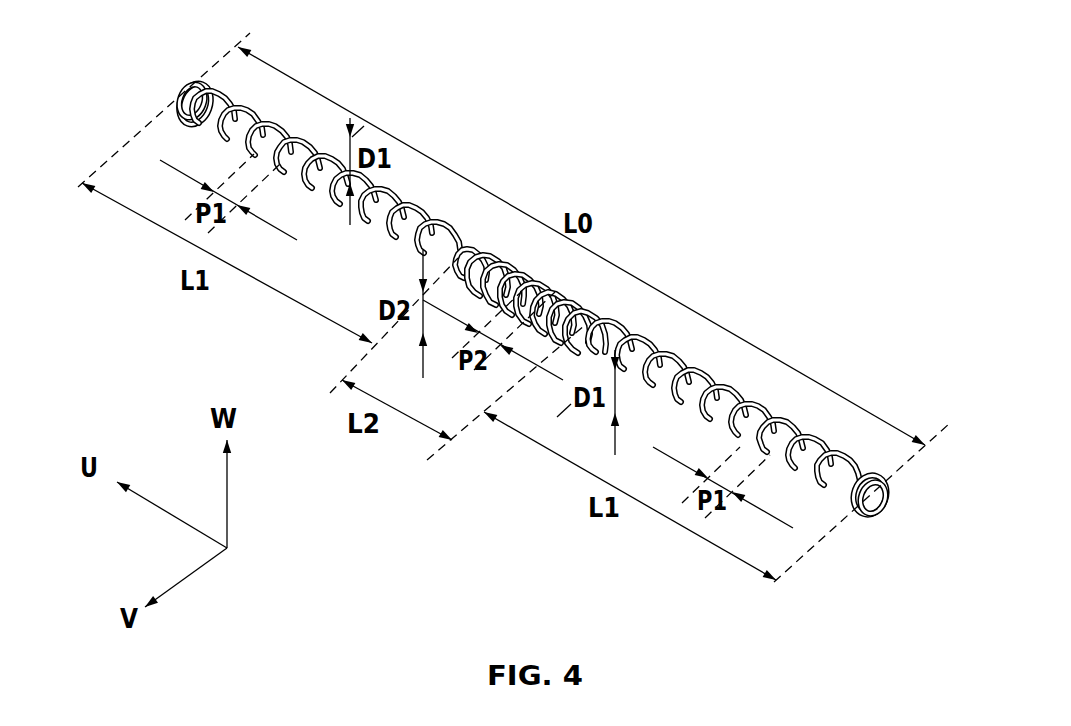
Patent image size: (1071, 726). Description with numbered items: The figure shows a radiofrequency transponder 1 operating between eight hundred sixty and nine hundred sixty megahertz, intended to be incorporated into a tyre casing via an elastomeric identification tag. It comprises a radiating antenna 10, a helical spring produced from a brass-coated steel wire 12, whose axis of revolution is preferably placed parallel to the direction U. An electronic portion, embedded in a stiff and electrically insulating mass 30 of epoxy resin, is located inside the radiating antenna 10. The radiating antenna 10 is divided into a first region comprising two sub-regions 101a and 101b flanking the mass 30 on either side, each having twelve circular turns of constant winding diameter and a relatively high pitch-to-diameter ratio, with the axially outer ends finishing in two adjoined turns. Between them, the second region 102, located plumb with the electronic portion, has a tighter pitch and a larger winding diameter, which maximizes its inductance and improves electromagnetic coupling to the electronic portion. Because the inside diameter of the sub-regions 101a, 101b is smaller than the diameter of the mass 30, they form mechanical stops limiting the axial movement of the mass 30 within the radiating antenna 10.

The radiofrequency transponder 1 is at (502, 326).
The radiating antenna 10 is at (423, 207).
The steel wire 12 is at (420, 230).
The mass of epoxy resin 30 is at (550, 292).
The sub-region of the first region 101a is at (350, 218).
The sub-region of the first region 101b is at (618, 538).
The second region of the radiating antenna 102 is at (499, 352).